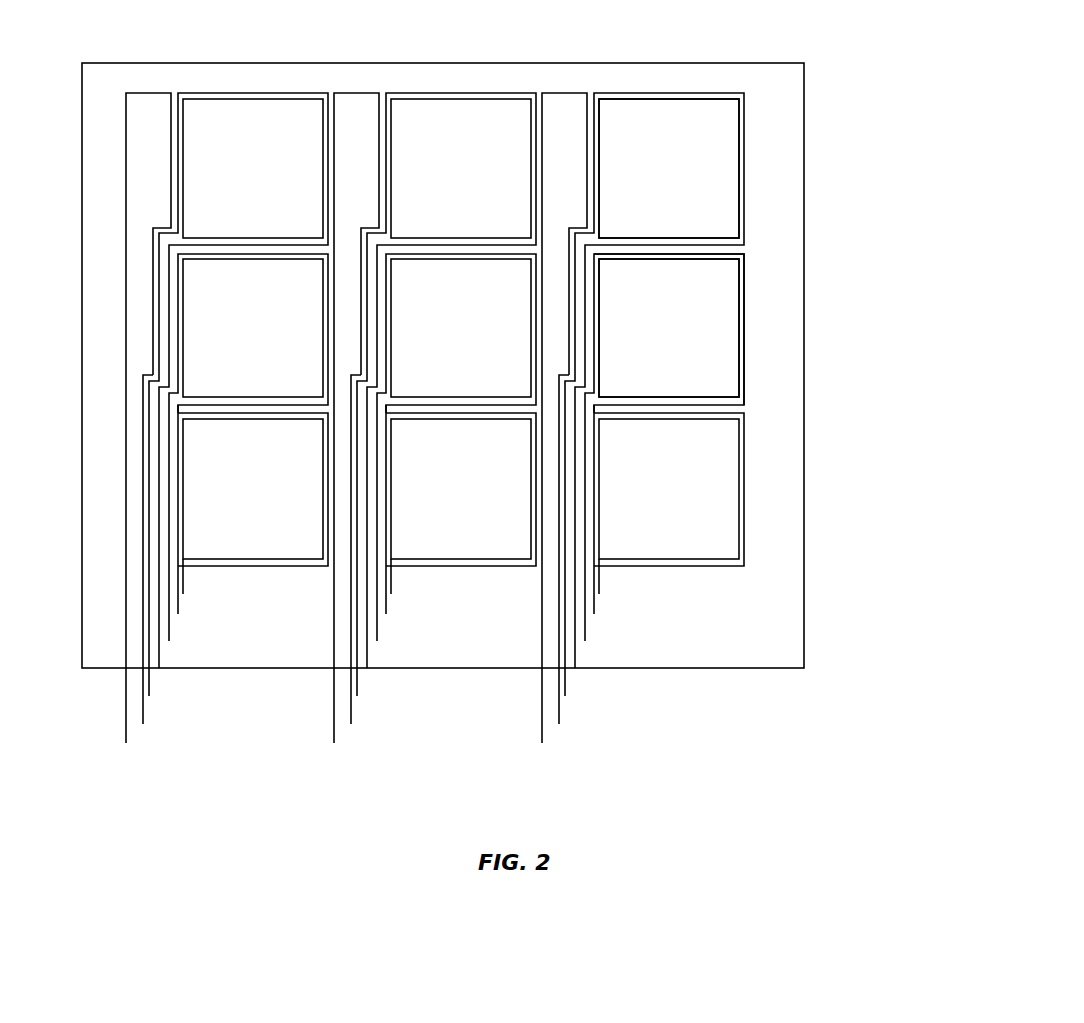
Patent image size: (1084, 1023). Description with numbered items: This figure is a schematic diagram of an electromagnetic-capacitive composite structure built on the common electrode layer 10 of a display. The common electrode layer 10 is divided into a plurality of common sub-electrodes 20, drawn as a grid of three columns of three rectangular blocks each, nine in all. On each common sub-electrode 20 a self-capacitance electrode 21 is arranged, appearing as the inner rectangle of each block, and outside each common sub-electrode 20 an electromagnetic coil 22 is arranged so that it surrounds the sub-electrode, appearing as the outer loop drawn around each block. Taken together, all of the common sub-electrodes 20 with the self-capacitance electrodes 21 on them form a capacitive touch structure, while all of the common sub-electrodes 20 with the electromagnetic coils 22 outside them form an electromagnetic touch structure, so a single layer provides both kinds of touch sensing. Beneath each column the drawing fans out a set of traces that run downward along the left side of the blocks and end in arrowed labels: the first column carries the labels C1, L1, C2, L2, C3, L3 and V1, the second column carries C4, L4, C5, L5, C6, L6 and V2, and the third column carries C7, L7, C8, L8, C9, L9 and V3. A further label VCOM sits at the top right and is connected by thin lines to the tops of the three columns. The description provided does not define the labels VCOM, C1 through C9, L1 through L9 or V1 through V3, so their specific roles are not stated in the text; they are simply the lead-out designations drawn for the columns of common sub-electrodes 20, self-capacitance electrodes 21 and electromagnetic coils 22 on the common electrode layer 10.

The common electrode layer 10 is at (805, 537).
The common sub-electrode 20 is at (744, 355).
The self-capacitance electrode 21 is at (735, 297).
The electromagnetic coil 22 is at (688, 105).
The common voltage signal VCOM is at (472, 34).
The touch electrode C1 is at (183, 594).
The touch electrode C2 is at (169, 641).
The touch electrode C3 is at (149, 696).
The touch electrode C4 is at (461, 508).
The touch electrode C5 is at (456, 452).
The touch electrode C6 is at (446, 399).
The touch electrode C7 is at (669, 508).
The touch electrode C8 is at (664, 452).
The touch electrode C9 is at (654, 399).
The touch signal line L1 is at (178, 614).
The touch signal line L2 is at (159, 668).
The touch signal line L3 is at (143, 724).
The touch signal line L4 is at (407, 514).
The touch signal line L5 is at (388, 535).
The touch signal line L6 is at (372, 554).
The touch signal line L7 is at (615, 514).
The touch signal line L8 is at (596, 535).
The touch signal line L9 is at (580, 554).
The common voltage line V1 is at (126, 743).
The common voltage line V2 is at (362, 423).
The common voltage line V3 is at (570, 423).